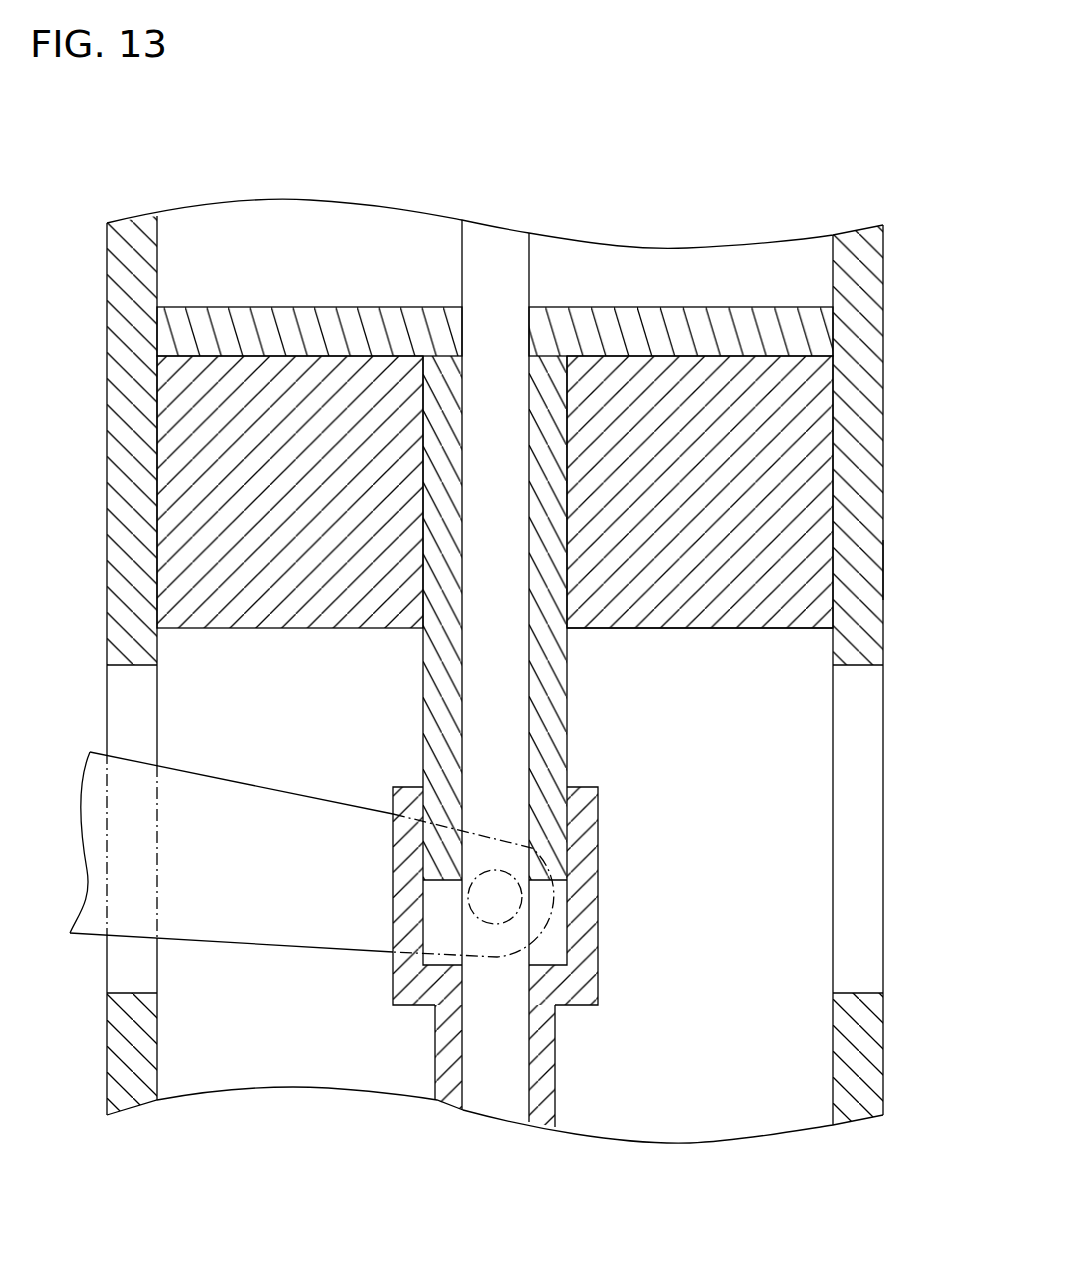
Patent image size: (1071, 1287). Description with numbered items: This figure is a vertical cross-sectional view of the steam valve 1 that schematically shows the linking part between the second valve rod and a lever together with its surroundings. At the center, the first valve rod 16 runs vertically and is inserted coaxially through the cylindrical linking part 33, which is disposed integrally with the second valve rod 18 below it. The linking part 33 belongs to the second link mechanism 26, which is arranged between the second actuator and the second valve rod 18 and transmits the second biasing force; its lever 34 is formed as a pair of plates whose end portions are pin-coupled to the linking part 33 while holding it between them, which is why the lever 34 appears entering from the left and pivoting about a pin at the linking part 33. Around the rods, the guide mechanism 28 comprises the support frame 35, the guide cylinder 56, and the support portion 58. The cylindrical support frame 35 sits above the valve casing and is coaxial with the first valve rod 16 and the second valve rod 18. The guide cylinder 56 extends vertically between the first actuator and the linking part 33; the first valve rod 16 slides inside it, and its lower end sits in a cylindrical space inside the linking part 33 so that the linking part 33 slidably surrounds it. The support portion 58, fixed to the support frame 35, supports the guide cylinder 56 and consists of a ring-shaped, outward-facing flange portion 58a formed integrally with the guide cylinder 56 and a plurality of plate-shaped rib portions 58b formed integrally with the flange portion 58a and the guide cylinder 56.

The steam valve 1 is at (806, 166).
The first valve rod 16 is at (520, 673).
The second valve rod 18 is at (555, 1062).
The second link mechanism 26 is at (224, 772).
The guide mechanism 28 is at (889, 467).
The linking part 33 is at (598, 912).
The lever 34 is at (278, 788).
The support frame 35 is at (885, 565).
The guide cylinder 56 is at (567, 725).
The support portion 58 is at (745, 612).
The flange portion 58a is at (690, 320).
The rib portion 58b is at (694, 617).